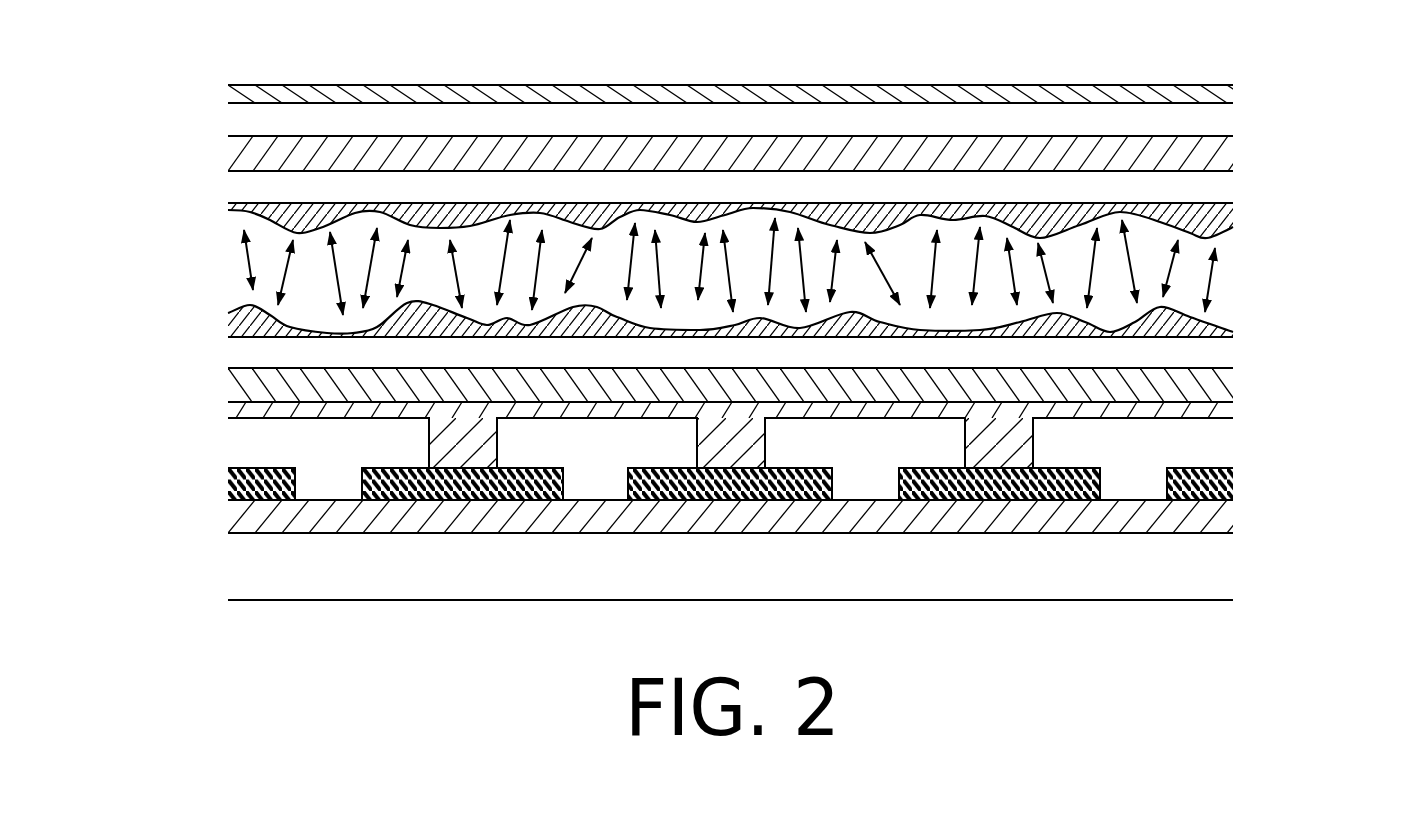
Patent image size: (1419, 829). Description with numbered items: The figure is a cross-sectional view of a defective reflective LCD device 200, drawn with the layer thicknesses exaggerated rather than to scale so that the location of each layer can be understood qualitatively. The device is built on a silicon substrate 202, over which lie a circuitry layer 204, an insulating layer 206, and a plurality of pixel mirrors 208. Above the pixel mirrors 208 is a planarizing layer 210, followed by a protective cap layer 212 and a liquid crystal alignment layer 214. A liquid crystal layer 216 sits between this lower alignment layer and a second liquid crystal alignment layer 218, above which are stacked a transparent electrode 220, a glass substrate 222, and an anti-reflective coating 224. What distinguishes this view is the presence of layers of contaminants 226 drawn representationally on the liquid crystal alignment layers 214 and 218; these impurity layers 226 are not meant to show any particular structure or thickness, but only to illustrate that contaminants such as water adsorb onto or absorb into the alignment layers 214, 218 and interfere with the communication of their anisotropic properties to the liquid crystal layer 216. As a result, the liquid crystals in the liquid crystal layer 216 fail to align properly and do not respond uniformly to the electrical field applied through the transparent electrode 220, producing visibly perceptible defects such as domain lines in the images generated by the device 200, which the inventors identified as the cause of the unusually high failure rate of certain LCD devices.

The reflective LCD device 200 is at (284, 646).
The silicon substrate 202 is at (1217, 566).
The circuitry layer 204 is at (233, 530).
The insulating layer 206 is at (1233, 487).
The pixel mirrors 208 is at (242, 449).
The planarizing layer 210 is at (1217, 407).
The protective cap layer 212 is at (233, 390).
The liquid crystal alignment layer 214 is at (1217, 350).
The liquid crystal layer 216 is at (240, 277).
The second liquid crystal alignment layer 218 is at (1217, 185).
The transparent electrode 220 is at (232, 154).
The glass substrate 222 is at (1217, 118).
The anti-reflective coating 224 is at (232, 96).
The layers of contaminants 226 is at (1202, 215).